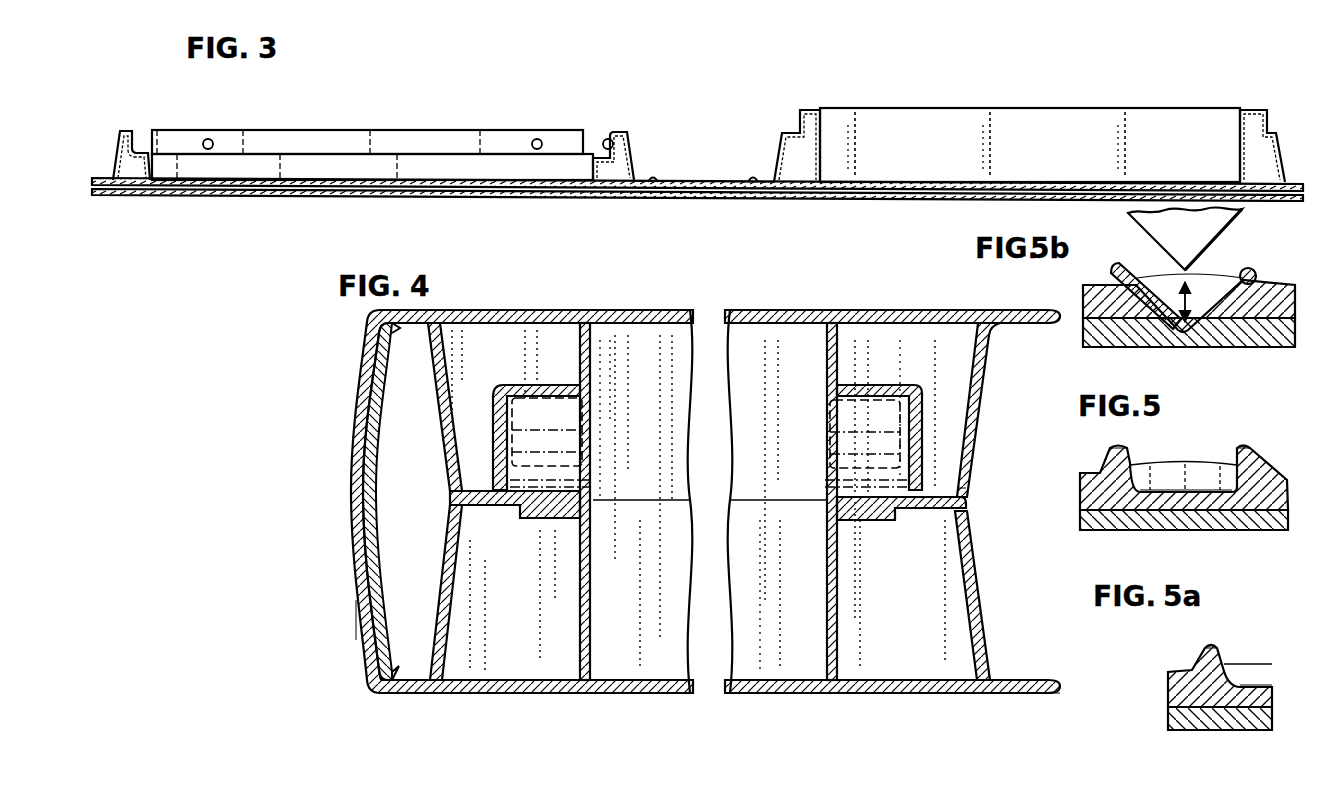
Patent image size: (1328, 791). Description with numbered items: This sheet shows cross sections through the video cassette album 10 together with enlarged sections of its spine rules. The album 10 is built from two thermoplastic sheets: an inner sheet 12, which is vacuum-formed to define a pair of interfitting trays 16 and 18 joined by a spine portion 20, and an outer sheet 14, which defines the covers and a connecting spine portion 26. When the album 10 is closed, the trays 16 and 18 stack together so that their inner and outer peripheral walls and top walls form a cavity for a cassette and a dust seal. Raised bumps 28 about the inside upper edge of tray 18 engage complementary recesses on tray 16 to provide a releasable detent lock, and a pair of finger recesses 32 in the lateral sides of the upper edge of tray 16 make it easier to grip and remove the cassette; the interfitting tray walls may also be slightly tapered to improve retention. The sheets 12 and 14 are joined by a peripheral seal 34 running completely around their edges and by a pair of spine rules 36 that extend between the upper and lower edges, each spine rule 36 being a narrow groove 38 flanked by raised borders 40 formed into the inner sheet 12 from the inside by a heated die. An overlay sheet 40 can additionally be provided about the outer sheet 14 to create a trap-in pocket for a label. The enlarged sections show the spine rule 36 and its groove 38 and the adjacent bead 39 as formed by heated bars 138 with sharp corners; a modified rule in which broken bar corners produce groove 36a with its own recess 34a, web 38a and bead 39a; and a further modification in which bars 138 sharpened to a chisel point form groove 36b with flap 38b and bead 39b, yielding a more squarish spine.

In FIG. 3, the album 10 is at (500, 93).
In FIG. 4, the album 10 is at (322, 353).
In FIG. 3, the inner sheet 12 is at (1100, 81).
In FIG. 4, the inner sheet 12 is at (990, 626).
In FIG. 5b, the inner sheet 12 is at (1095, 290).
In FIG. 5, the inner sheet 12 is at (1297, 451).
In FIG. 5a, the inner sheet 12 is at (1166, 669).
In FIG. 3, the outer sheet 14 is at (397, 150).
In FIG. 4, the outer sheet 14 is at (982, 421).
In FIG. 5b, the outer sheet 14 is at (1112, 347).
In FIG. 5, the outer sheet 14 is at (1232, 534).
In FIG. 5a, the outer sheet 14 is at (1212, 736).
In FIG. 3, the tray 16 is at (913, 118).
In FIG. 4, the tray 16 is at (979, 578).
In FIG. 3, the tray 18 is at (331, 150).
In FIG. 4, the tray 18 is at (966, 486).
In FIG. 3, the spine portion 20 is at (700, 182).
In FIG. 4, the spine portion 20 is at (377, 471).
In FIG. 4, the spine portion 26 is at (377, 517).
In FIG. 3, the raised bumps 28 is at (182, 111).
In FIG. 4, the raised bumps 28 is at (512, 428).
In FIG. 3, the finger recesses 32 is at (802, 116).
In FIG. 4, the peripheral seal 34 is at (1062, 684).
In FIG. 5, the peripheral seal 34 is at (1177, 463).
In FIG. 3, the spine rules 36 is at (670, 154).
In FIG. 4, the spine rules 36 is at (404, 347).
In FIG. 5, the spine rules 36 is at (1252, 410).
In FIG. 5, the groove 38 is at (1170, 488).
In FIG. 5, the hinge bead 39 is at (1121, 446).
In FIG. 3, the raised borders 40 is at (1058, 200).
In FIG. 4, the raised borders 40 is at (352, 647).
In FIG. 5b, the bars 138 is at (1220, 224).
In FIG. 5a, the groove 36a is at (1274, 657).
In FIG. 5a, the recess (alternate) 34a is at (1267, 661).
In FIG. 5a, the hinge web (alternate) 38a is at (1258, 680).
In FIG. 5a, the hinge bead (alternate) 39a is at (1210, 647).
In FIG. 5b, the groove 36b is at (1238, 251).
In FIG. 5b, the hinge flap (second alternate) 38b is at (1142, 280).
In FIG. 5b, the hinge bead (second alternate) 39b is at (1254, 274).